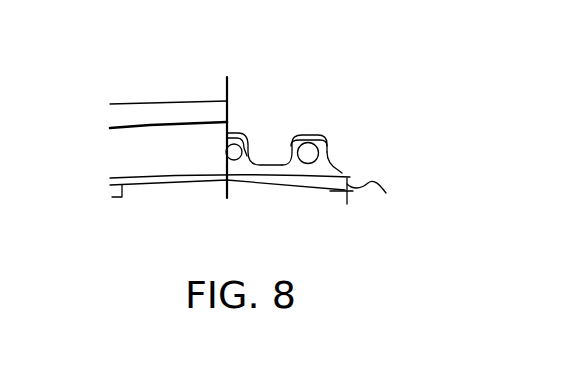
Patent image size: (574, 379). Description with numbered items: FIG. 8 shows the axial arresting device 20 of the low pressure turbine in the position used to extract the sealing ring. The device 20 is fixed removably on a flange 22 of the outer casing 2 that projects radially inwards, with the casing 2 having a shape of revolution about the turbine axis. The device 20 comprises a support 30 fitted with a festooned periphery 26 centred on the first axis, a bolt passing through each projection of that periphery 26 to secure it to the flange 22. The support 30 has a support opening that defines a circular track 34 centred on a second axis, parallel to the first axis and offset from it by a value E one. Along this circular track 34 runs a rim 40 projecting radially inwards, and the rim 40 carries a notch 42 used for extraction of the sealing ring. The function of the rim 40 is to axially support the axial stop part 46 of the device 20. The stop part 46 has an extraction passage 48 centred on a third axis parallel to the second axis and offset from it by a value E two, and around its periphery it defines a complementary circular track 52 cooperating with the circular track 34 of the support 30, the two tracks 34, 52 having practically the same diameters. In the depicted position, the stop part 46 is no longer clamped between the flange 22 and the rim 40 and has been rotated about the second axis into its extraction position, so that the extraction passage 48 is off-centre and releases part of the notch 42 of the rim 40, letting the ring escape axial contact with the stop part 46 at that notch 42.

The outer casing 2 is at (190, 112).
The axial arresting device 20 is at (120, 202).
The flange 22 is at (148, 140).
The festooned periphery 26 is at (327, 138).
The support 30 is at (340, 170).
The circular track 34 is at (377, 194).
The rim 40 is at (347, 204).
The notch 42 is at (331, 192).
The axial stop part 46 is at (263, 173).
The extraction passage 48 is at (230, 182).
The complementary circular track 52 is at (262, 172).